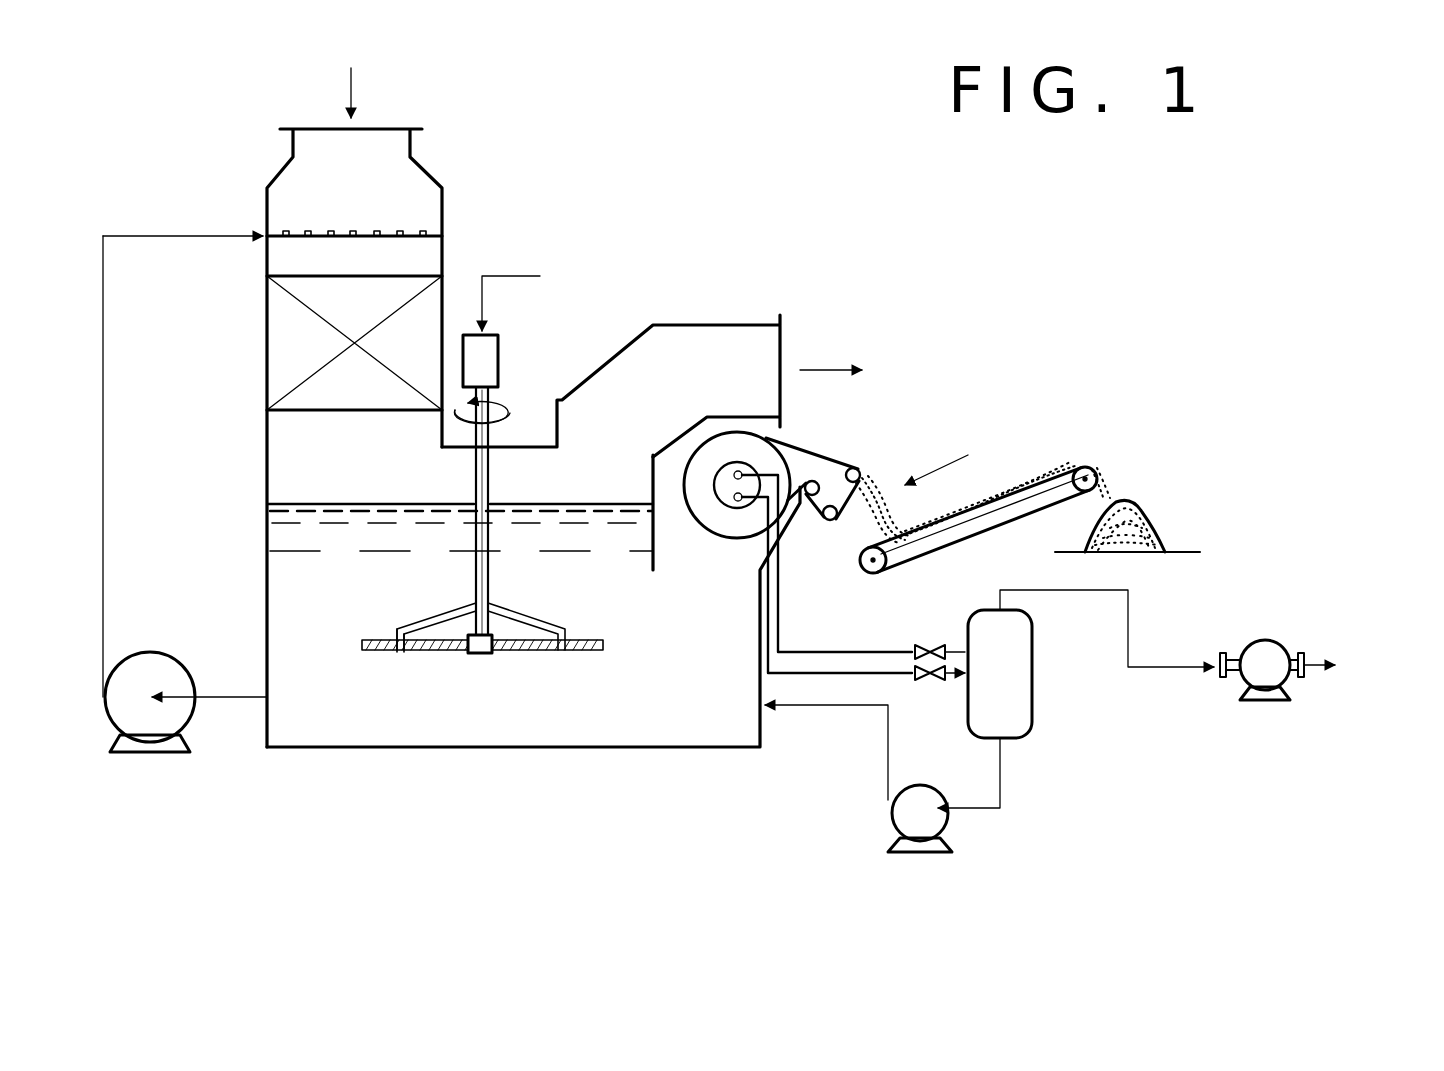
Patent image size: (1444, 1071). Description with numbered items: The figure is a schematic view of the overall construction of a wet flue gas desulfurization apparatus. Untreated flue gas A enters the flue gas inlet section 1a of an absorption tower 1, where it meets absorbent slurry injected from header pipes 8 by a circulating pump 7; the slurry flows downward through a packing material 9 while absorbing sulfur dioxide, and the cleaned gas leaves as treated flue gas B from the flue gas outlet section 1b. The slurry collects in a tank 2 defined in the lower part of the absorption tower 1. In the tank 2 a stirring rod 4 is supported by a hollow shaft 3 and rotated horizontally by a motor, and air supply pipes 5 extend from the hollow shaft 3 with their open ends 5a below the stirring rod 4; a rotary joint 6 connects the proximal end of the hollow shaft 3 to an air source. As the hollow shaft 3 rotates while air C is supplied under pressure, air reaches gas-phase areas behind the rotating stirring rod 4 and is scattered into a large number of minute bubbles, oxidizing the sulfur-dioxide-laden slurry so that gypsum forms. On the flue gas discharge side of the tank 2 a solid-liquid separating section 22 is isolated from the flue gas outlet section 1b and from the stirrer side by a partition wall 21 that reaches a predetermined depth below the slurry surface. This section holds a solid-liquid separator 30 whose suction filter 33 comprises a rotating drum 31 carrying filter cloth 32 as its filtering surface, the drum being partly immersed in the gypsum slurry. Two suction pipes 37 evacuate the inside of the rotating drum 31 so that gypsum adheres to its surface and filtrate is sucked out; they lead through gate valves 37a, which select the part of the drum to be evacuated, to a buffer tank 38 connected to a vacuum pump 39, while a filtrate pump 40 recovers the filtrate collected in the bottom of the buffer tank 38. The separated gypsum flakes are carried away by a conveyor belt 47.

The absorption tower 1 is at (265, 457).
The flue gas inlet section 1a is at (278, 252).
The flue gas outlet section 1b is at (735, 326).
The tank 2 is at (372, 749).
The hollow shaft 3 is at (490, 576).
The stirring rod 4 is at (447, 655).
The air supply pipes 5 is at (412, 628).
The open ends 5a is at (400, 655).
The rotary joint 6 is at (498, 352).
The circulating pump 7 is at (184, 663).
The header pipes 8 is at (296, 232).
The packing material 9 is at (265, 352).
The partition wall 21 is at (651, 470).
The solid-liquid separating section 22 is at (792, 542).
The solid-liquid separator 30 is at (975, 473).
The rotating drum 31 is at (767, 453).
The filter cloth 32 is at (820, 452).
The suction filter 33 is at (872, 388).
The suction pipes 37 is at (823, 676).
The gate valves 37a is at (917, 650).
The buffer tank 38 is at (1034, 697).
The vacuum pump 39 is at (1265, 641).
The filtrate pump 40 is at (892, 830).
The conveyor belt 47 is at (1025, 497).
The untreated flue gas A is at (354, 85).
The treated flue gas B is at (853, 369).
The air C is at (508, 274).